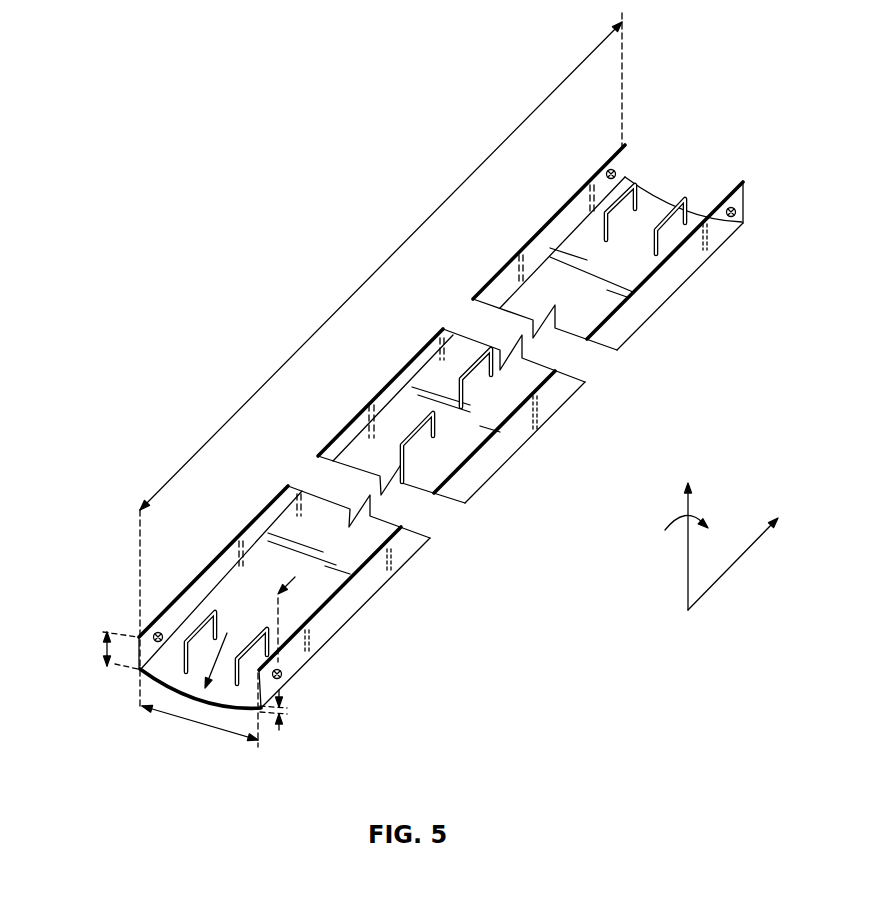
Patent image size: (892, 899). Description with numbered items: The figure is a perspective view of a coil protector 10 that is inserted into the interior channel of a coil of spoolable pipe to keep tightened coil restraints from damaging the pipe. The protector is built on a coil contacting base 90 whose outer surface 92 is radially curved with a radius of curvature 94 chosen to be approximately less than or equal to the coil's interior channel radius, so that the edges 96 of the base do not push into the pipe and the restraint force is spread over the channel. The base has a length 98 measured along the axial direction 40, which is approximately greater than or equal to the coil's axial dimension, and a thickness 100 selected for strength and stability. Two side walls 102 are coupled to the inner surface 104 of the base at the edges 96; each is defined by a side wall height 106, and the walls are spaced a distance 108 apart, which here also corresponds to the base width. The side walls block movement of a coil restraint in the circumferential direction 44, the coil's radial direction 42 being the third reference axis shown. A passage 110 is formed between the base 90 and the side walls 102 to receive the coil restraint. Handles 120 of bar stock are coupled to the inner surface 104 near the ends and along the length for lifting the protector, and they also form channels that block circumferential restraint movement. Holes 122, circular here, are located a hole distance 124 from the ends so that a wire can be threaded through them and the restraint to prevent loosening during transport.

The coil protector 10 is at (466, 108).
The axial axis or direction 40 is at (718, 568).
The radial axis or direction 42 is at (684, 556).
The circumferential axis or direction 44 is at (672, 522).
The coil contacting base 90 is at (703, 196).
The outer surface 92 is at (183, 702).
The radius of curvature 94 is at (145, 714).
The edges 96 is at (130, 683).
The length 98 is at (364, 283).
The thickness 100 is at (283, 728).
The side walls 102 is at (331, 615).
The inner surface 104 is at (470, 440).
The side wall height 106 is at (102, 648).
The distance 108 is at (188, 712).
The passage 110 is at (722, 176).
The handles 120 is at (685, 197).
The holes 122 is at (606, 150).
The hole distance 124 is at (252, 611).